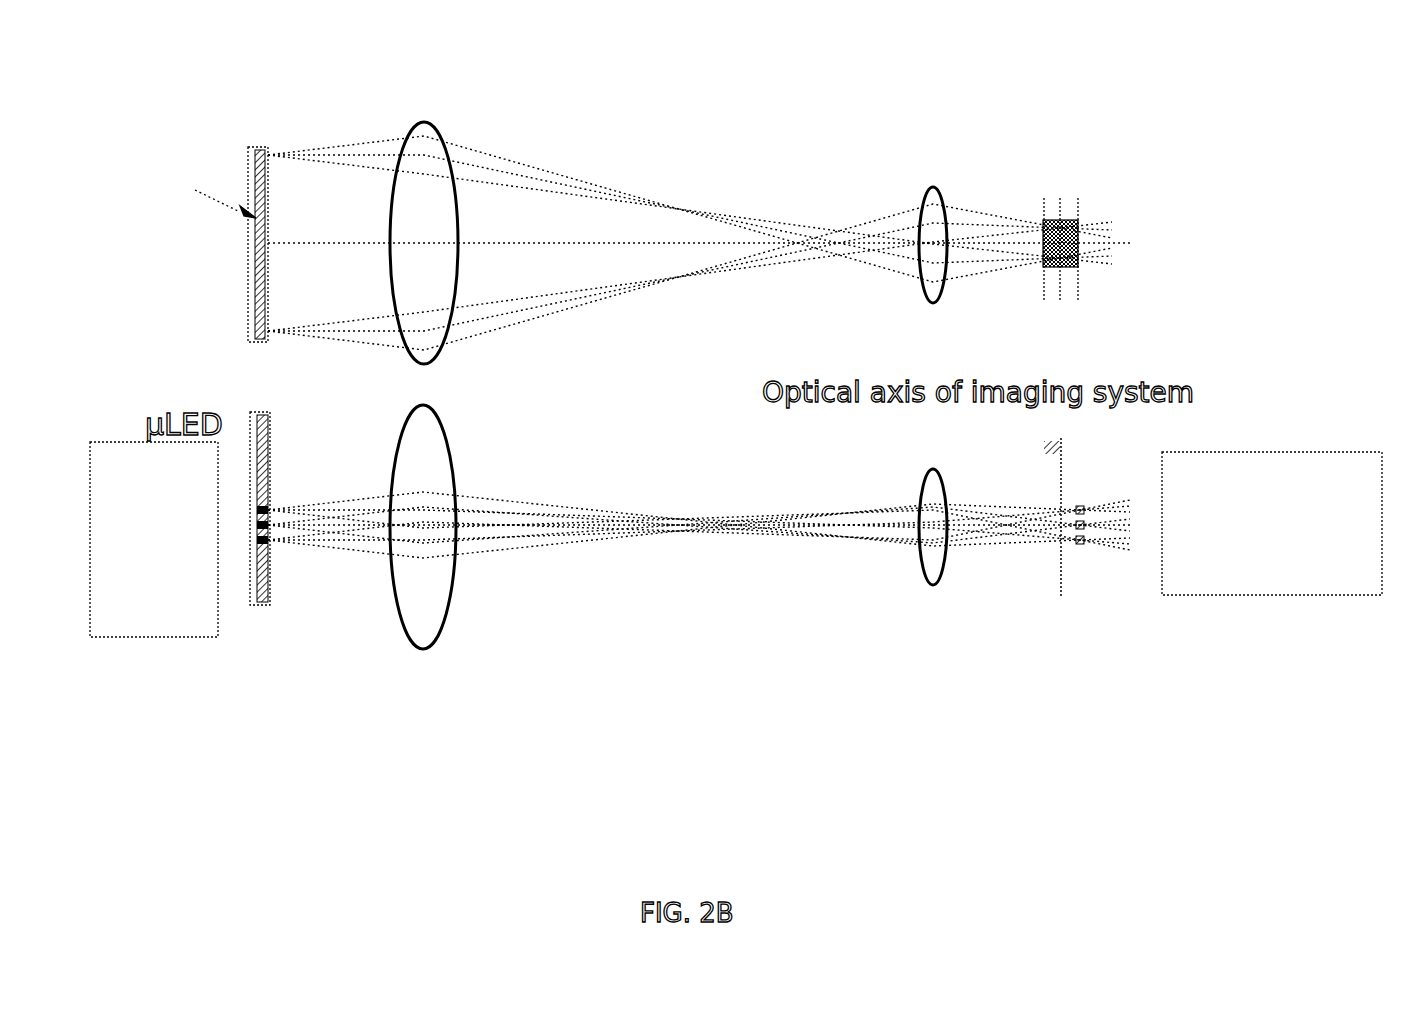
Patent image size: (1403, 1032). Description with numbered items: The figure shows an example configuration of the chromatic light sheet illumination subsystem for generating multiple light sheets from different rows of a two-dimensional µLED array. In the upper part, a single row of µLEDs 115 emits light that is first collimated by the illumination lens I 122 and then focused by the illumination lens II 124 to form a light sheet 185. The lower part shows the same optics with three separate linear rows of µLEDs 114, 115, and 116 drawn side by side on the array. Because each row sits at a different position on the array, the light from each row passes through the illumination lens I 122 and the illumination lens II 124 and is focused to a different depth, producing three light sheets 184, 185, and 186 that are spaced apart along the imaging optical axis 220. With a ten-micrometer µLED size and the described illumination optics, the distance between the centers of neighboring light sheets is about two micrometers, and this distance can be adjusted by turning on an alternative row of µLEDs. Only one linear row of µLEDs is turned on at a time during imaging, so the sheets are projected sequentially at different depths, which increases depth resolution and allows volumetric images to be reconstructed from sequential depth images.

The row of µLEDs 114 is at (237, 503).
The row of µLEDs 115 is at (258, 112).
The row of µLEDs 116 is at (237, 546).
The illumination lens I 122 is at (482, 357).
The illumination lens II 124 is at (899, 296).
The light sheet 184 is at (1084, 508).
The light sheet 185 is at (1100, 200).
The light sheet 186 is at (1084, 542).
The imaging optical axis 220 is at (1044, 450).